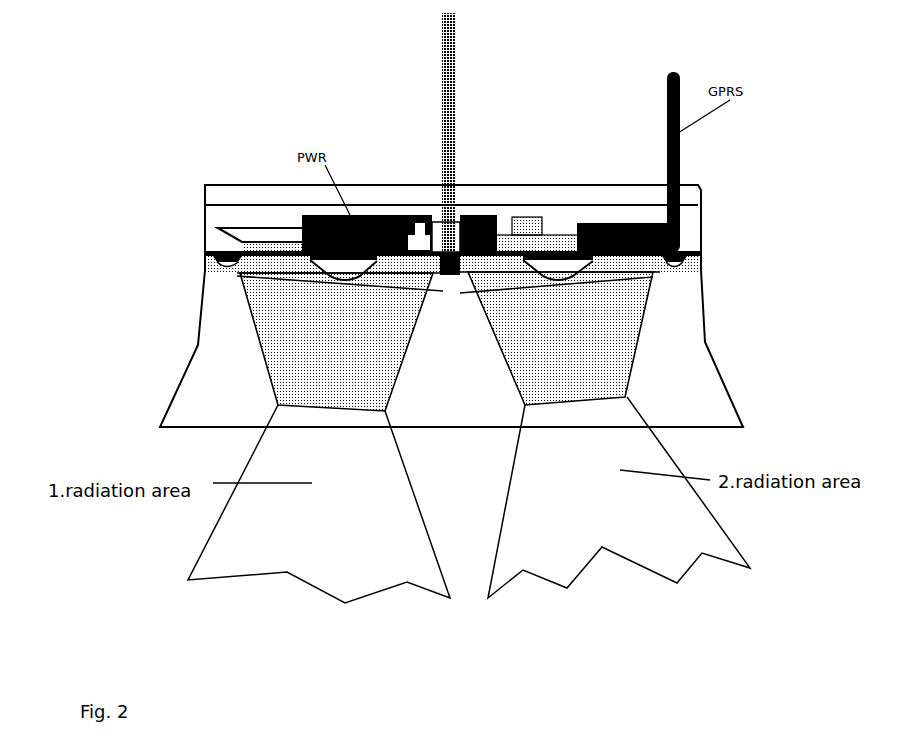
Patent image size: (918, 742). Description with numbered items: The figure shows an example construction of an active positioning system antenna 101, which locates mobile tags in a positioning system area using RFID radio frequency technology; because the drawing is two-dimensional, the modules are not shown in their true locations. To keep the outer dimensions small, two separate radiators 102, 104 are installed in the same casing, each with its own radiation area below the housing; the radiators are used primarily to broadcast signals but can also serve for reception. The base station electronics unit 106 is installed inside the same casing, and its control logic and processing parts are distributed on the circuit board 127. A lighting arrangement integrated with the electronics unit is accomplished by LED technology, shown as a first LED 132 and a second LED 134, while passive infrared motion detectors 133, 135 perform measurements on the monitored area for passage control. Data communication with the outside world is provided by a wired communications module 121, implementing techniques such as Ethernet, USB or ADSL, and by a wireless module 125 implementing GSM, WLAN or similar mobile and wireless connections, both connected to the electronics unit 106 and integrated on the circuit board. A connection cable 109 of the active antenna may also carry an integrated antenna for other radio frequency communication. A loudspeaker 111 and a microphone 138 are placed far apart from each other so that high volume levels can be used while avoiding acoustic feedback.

The active positioning system antenna 101 is at (205, 185).
The electronics unit 106 is at (252, 222).
The connection cable 109 is at (455, 48).
The loudspeaker 111 is at (240, 228).
The wired communications module 121 is at (525, 233).
The wireless communication module 125 is at (690, 238).
The circuit board 127 is at (204, 251).
The LED 132 is at (214, 263).
The infrared motion detector 133 is at (310, 283).
The LED 134 is at (690, 257).
The infrared motion detector 135 is at (470, 272).
The microphone 138 is at (507, 278).
The radiator 102 is at (295, 365).
The radiator 104 is at (593, 375).